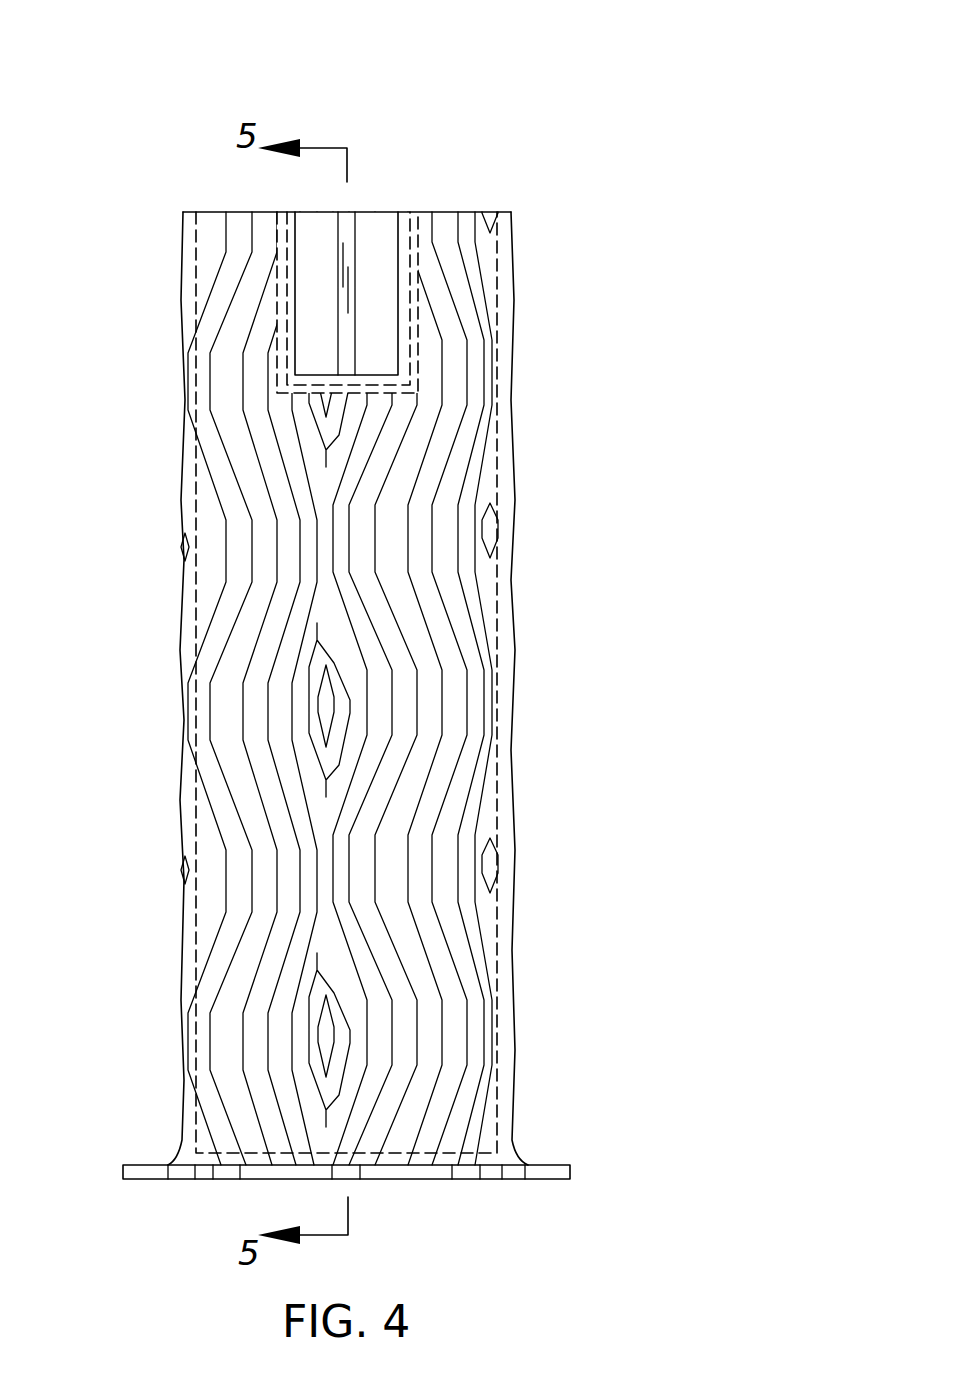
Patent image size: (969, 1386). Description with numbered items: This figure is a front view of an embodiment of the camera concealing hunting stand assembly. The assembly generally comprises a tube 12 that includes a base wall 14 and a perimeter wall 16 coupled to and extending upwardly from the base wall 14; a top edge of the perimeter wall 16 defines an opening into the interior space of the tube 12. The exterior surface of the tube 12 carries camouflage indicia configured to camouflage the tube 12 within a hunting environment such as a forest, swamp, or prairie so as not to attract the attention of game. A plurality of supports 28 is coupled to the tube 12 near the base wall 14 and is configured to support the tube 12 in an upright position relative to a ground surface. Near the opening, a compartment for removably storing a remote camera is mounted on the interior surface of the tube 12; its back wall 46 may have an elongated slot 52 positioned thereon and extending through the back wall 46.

The tube 12 is at (371, 650).
The base wall 14 is at (420, 1167).
The perimeter wall 16 is at (371, 688).
The supports 28 is at (317, 698).
The back wall 46 is at (379, 253).
The elongated slot 52 is at (345, 235).